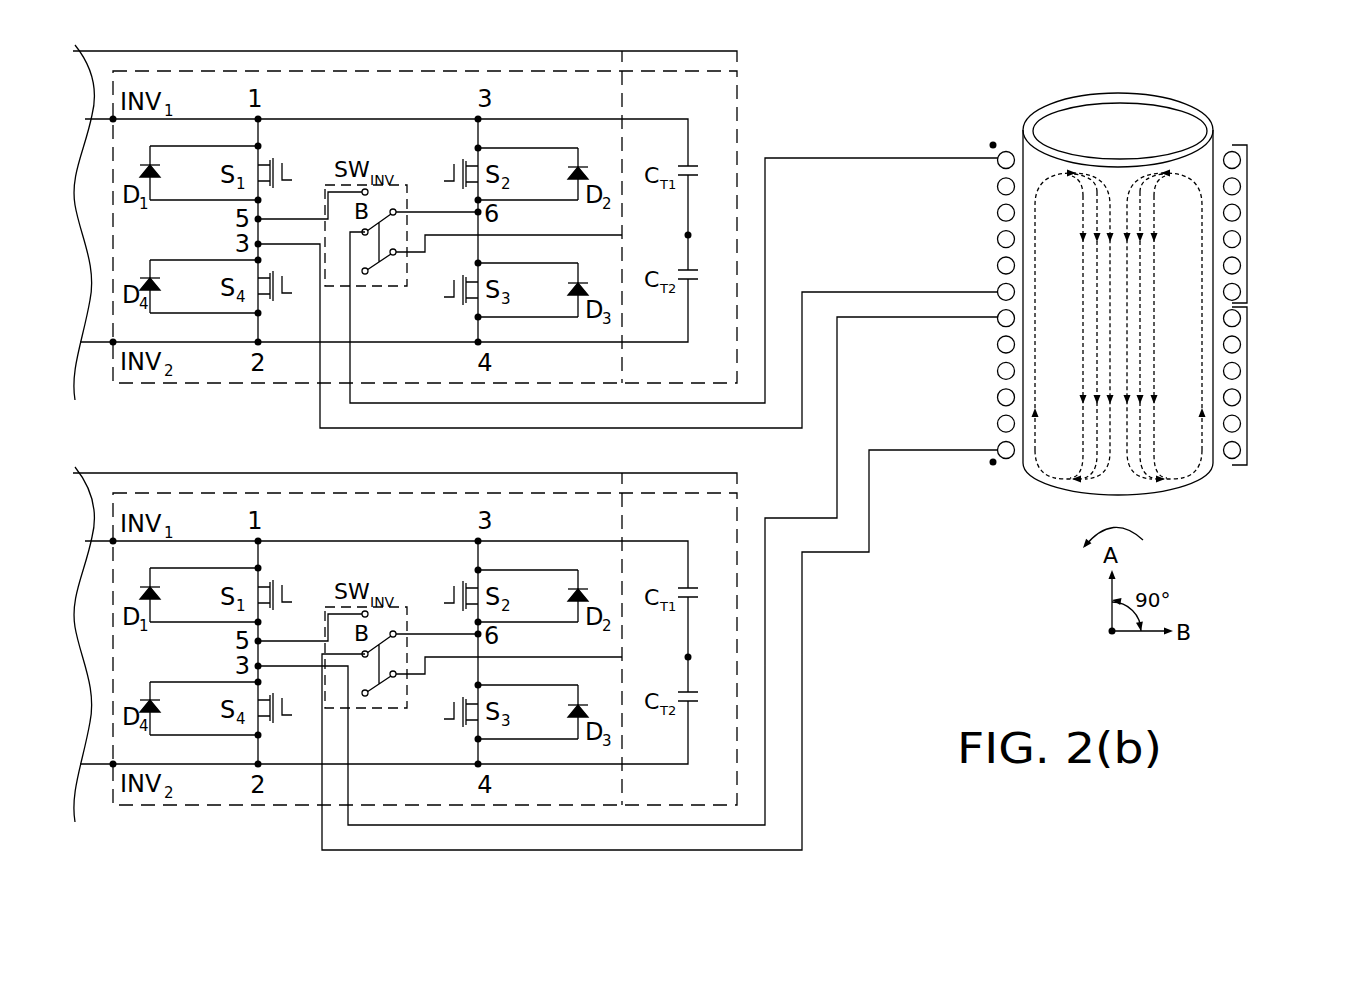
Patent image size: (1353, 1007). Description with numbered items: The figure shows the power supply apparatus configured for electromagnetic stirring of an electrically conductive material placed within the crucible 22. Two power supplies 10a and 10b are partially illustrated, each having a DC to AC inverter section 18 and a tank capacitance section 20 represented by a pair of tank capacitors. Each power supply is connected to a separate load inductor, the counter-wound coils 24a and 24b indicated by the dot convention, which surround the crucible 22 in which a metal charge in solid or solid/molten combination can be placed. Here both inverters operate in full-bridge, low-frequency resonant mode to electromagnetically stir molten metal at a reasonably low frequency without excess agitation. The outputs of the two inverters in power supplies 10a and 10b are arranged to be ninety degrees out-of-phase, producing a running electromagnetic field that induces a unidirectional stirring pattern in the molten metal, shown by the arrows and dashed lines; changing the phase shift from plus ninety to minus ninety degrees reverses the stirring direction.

The power supply 10a is at (765, 72).
The power supply 10b is at (751, 493).
The DC to AC inverter section 18 is at (368, 51).
The tank capacitance section 20 is at (683, 51).
The crucible 22 is at (1185, 103).
The load inductor 24a is at (1247, 223).
The load inductor 24b is at (1247, 383).